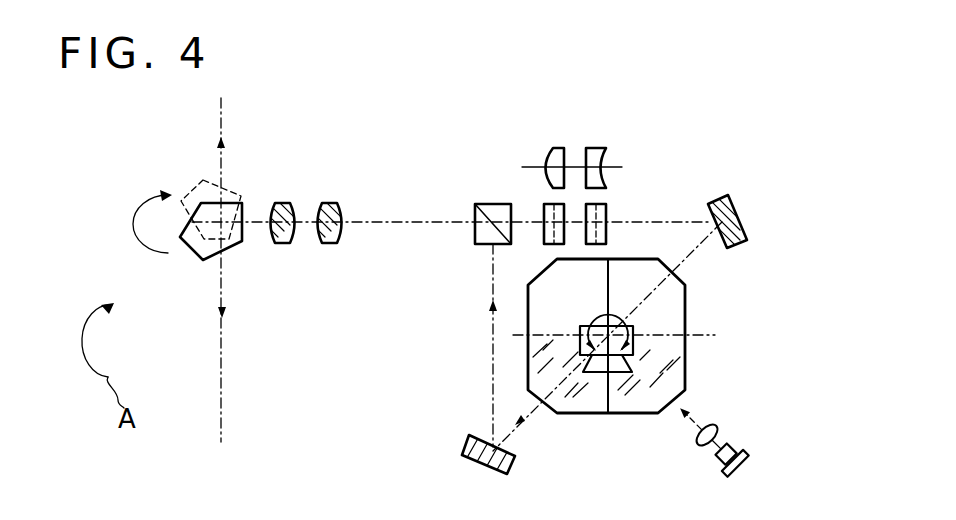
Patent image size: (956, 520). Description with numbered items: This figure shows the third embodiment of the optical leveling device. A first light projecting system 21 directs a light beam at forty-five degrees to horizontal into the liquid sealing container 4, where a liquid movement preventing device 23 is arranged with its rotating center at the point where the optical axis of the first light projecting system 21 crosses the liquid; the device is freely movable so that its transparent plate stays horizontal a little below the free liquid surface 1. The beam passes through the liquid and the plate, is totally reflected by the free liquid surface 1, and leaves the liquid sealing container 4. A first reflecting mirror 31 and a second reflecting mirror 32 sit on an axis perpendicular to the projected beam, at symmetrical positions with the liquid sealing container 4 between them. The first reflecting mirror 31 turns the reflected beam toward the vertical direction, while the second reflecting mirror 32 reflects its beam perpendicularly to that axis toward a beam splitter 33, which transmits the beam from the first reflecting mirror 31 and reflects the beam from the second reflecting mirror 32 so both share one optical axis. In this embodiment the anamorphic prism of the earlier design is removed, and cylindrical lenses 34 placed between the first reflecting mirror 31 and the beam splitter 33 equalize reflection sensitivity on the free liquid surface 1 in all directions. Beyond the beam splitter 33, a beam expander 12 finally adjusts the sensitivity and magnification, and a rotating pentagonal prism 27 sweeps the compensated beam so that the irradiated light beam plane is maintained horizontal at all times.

The free liquid surface 1 is at (575, 333).
The liquid sealing container 4 is at (690, 308).
The beam expander 12 is at (342, 195).
The first light projecting system 21 is at (726, 427).
The liquid movement preventing device 23 is at (580, 352).
The pentagonal prism 27 is at (222, 200).
The first reflecting mirror 31 is at (728, 197).
The second reflecting mirror 32 is at (469, 438).
The beam splitter 33 is at (498, 204).
The cylindrical lenses 34 is at (598, 139).